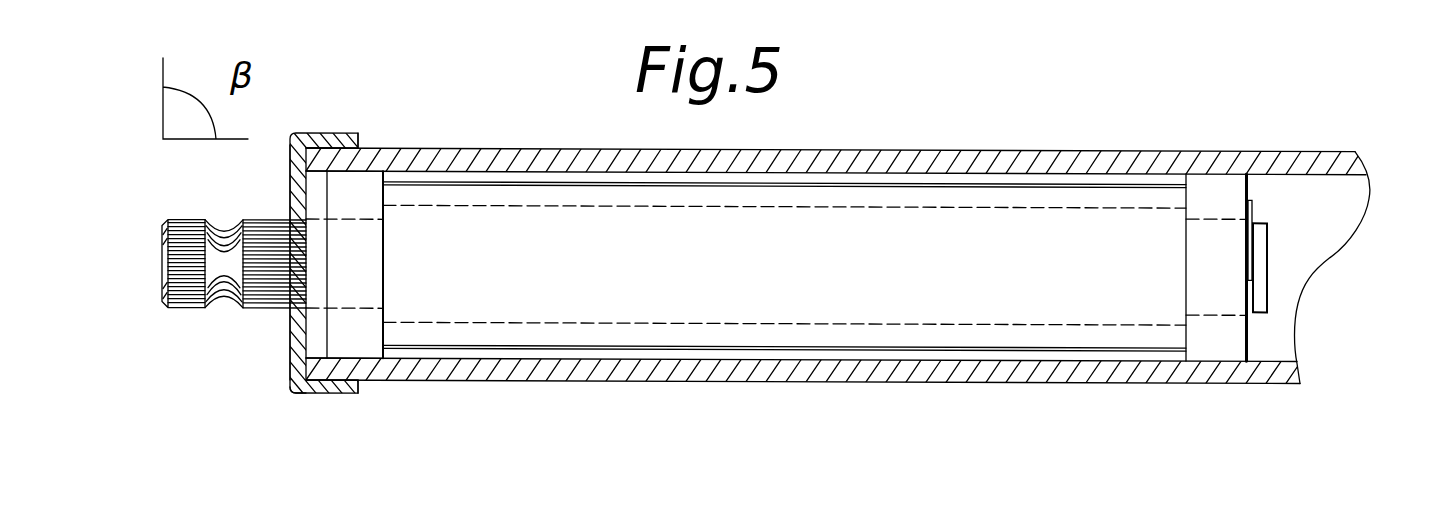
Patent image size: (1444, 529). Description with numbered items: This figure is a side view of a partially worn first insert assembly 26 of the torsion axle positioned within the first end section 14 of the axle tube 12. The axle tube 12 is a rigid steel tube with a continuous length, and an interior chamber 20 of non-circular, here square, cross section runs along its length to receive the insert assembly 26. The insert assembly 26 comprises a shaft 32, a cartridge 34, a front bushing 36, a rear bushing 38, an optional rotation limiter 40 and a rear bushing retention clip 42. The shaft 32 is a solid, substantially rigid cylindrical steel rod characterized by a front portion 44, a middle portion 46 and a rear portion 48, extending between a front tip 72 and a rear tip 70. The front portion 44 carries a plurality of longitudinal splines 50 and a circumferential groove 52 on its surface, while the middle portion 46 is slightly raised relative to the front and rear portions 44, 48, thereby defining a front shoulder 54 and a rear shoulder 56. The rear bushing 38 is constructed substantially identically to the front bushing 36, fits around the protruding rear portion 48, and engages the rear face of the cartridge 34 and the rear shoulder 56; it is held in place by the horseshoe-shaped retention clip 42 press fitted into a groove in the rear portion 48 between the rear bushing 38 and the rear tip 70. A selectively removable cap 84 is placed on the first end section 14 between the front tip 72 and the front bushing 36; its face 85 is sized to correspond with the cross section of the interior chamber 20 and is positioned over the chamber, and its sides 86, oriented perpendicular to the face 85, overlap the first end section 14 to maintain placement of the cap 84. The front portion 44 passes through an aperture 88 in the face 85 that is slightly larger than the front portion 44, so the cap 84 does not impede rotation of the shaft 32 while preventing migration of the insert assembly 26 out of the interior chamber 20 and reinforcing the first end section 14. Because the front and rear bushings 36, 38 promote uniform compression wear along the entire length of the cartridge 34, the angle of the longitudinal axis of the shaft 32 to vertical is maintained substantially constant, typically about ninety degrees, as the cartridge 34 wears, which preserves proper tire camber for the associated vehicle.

The axle tube 12 is at (807, 367).
The first end section 14 is at (582, 95).
The interior chamber 20 is at (1302, 230).
The first insert assembly 26 is at (1042, 186).
The shaft 32 is at (1055, 322).
The cartridge 34 is at (910, 348).
The front bushing 36 is at (350, 335).
The rear bushing 38 is at (1213, 340).
The rotation limiter 40 is at (317, 342).
The rear bushing retention clip 42 is at (1253, 208).
The front portion 44 is at (350, 233).
The middle portion 46 is at (948, 225).
The rear portion 48 is at (1218, 230).
The longitudinal splines 50 is at (187, 290).
The circumferential groove 52 is at (227, 297).
The front shoulder 54 is at (383, 294).
The rear shoulder 56 is at (1190, 228).
The rear tip 70 is at (1268, 263).
The front tip 72 is at (162, 261).
The cap 84 is at (293, 137).
The face 85 is at (289, 185).
The sides 86 is at (329, 133).
The aperture 88 is at (290, 313).